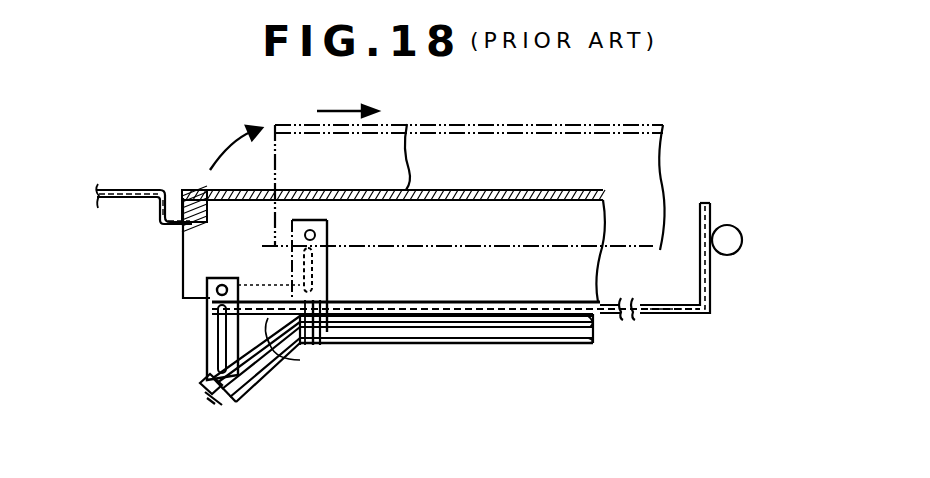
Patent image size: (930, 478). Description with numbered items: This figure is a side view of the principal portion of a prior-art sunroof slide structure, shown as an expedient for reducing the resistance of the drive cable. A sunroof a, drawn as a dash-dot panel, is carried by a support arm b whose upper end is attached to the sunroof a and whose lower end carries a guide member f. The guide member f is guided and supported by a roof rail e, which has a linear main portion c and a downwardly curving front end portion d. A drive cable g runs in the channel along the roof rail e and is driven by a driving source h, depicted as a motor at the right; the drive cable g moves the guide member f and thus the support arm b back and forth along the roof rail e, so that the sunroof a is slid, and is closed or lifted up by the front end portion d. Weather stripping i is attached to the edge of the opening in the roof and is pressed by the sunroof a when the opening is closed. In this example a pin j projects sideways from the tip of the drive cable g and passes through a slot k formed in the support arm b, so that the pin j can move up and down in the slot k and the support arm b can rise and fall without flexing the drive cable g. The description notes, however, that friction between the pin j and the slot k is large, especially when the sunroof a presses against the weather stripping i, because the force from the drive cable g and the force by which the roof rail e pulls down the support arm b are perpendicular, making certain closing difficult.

The sunroof a is at (426, 130).
The support arm b is at (207, 350).
The main portion c is at (506, 344).
The front end portion d is at (252, 382).
The roof rail e is at (402, 350).
The guide member f is at (232, 398).
The drive cable g is at (268, 340).
The driving source h is at (732, 225).
The weather stripping i is at (212, 206).
The pin j is at (244, 283).
The slot k is at (220, 325).